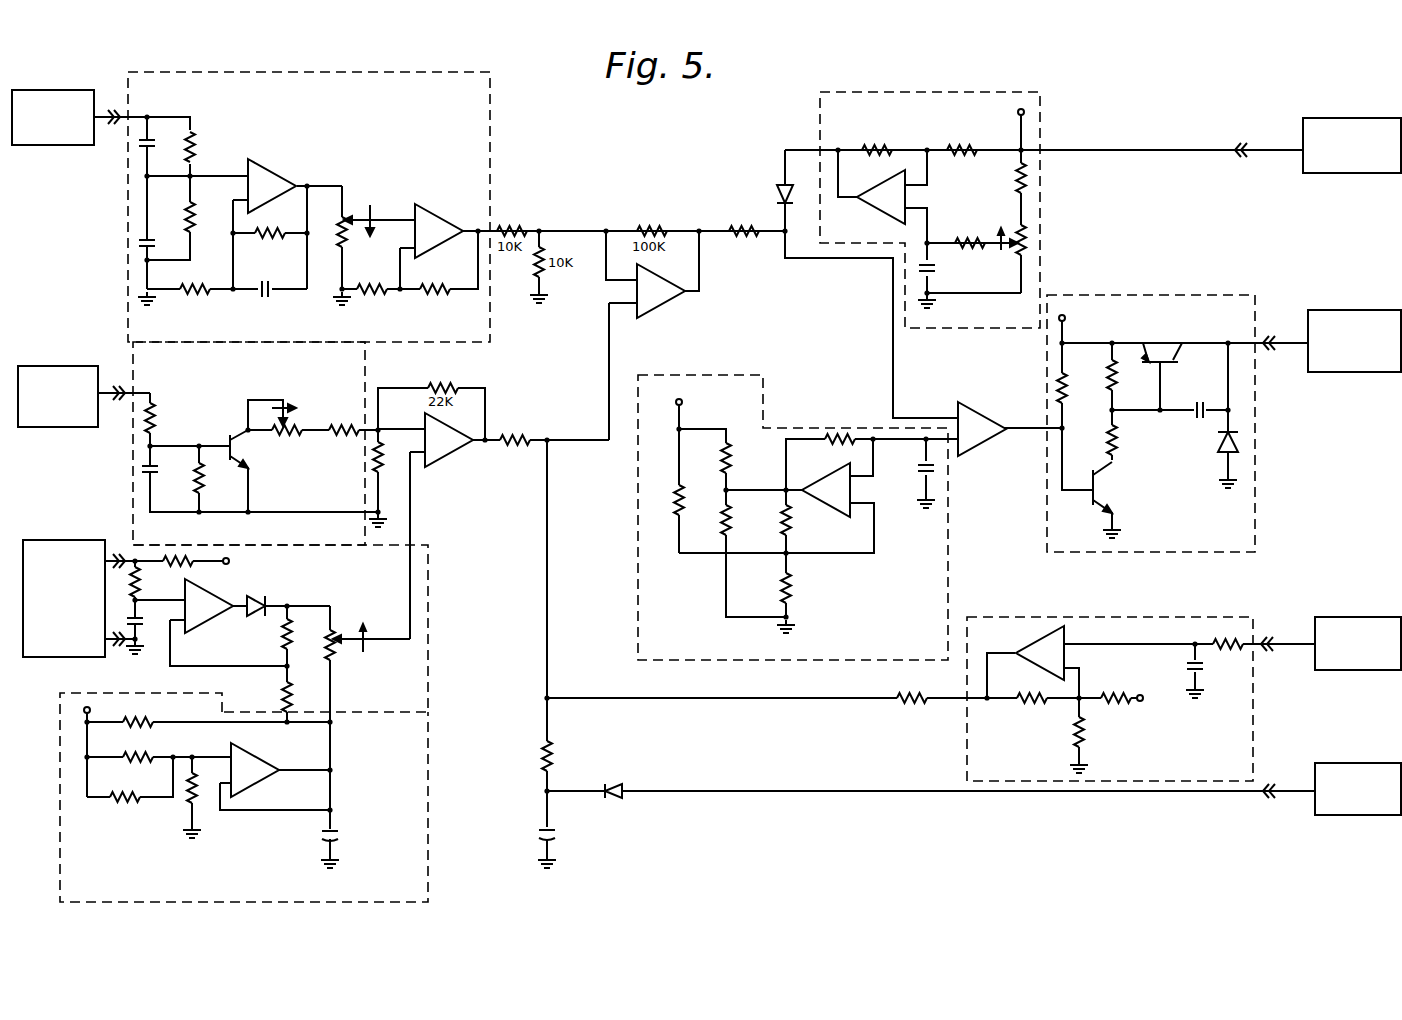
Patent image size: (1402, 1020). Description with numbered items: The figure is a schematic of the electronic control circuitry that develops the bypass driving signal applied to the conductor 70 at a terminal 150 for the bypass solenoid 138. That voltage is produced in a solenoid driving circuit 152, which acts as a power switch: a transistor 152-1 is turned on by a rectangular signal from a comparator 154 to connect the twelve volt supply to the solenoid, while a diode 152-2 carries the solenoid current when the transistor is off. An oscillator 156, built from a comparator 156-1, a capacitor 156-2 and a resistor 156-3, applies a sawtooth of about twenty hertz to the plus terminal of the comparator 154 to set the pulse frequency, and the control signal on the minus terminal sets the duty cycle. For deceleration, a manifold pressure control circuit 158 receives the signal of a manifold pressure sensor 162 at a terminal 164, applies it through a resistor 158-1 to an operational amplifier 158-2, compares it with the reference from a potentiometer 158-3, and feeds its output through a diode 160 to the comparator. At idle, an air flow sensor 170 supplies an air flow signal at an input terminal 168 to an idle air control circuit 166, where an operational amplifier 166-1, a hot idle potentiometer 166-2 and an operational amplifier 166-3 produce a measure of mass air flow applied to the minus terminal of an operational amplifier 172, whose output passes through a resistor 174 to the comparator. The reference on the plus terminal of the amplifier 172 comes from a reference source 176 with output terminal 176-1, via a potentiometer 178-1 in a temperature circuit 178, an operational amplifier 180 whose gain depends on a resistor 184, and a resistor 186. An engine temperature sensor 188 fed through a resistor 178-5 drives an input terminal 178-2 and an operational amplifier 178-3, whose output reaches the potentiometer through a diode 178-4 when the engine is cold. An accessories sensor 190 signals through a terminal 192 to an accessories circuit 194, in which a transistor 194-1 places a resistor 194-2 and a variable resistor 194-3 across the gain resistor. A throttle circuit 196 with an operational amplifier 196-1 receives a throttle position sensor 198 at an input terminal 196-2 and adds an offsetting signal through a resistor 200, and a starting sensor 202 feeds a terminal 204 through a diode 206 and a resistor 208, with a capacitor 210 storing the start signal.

The conductor 70 is at (1297, 340).
The bypass solenoid 138 is at (1350, 310).
The terminal 150 is at (1272, 340).
The solenoid driving circuit 152 is at (1236, 543).
The transistor 152-1 is at (1168, 365).
The diode 152-2 is at (1240, 455).
The comparator 154 is at (982, 402).
The oscillator 156 is at (922, 633).
The comparator 156-1 is at (850, 514).
The capacitor 156-2 is at (938, 468).
The resistor 156-3 is at (841, 432).
The manifold pressure control circuit 158 is at (1035, 315).
The resistor 158-1 is at (957, 147).
The operational amplifier 158-2 is at (870, 147).
The potentiometer 158-3 is at (1026, 238).
The diode 160 is at (780, 183).
The manifold pressure sensor 162 is at (1345, 118).
The terminal 164 is at (1240, 145).
The idle air control circuit 166 is at (476, 338).
The operational amplifier 166-1 is at (268, 168).
The potentiometer 166-2 is at (342, 212).
The operational amplifier 166-3 is at (432, 208).
The input terminal 168 is at (114, 110).
The air flow sensor 170 is at (42, 90).
The operational amplifier 172 is at (660, 300).
The resistor 174 is at (752, 238).
The reference source 176 is at (392, 883).
The output terminal 176-1 is at (333, 770).
The temperature circuit 178 is at (406, 683).
The potentiometer 178-1 is at (334, 632).
The input terminal 178-2 is at (116, 556).
The operational amplifier 178-3 is at (218, 583).
The diode 178-4 is at (262, 600).
The resistor 178-5 is at (176, 557).
The operational amplifier 180 is at (453, 452).
The resistor 184 is at (386, 462).
The resistor 186 is at (512, 432).
The engine temperature sensor 188 is at (35, 540).
The accessories sensor 190 is at (42, 366).
The terminal 192 is at (118, 389).
The accessories circuit 194 is at (348, 538).
The transistor 194-1 is at (230, 442).
The resistor 194-2 is at (344, 426).
The variable resistor 194-3 is at (250, 426).
The throttle circuit 196 is at (1229, 760).
The operational amplifier 196-1 is at (1050, 630).
The input terminal 196-2 is at (1270, 640).
The throttle position sensor 198 is at (1373, 617).
The resistor 200 is at (936, 695).
The starting sensor 202 is at (1362, 763).
The terminal 204 is at (1268, 796).
The diode 206 is at (620, 789).
The resistor 208 is at (540, 753).
The capacitor 210 is at (540, 831).